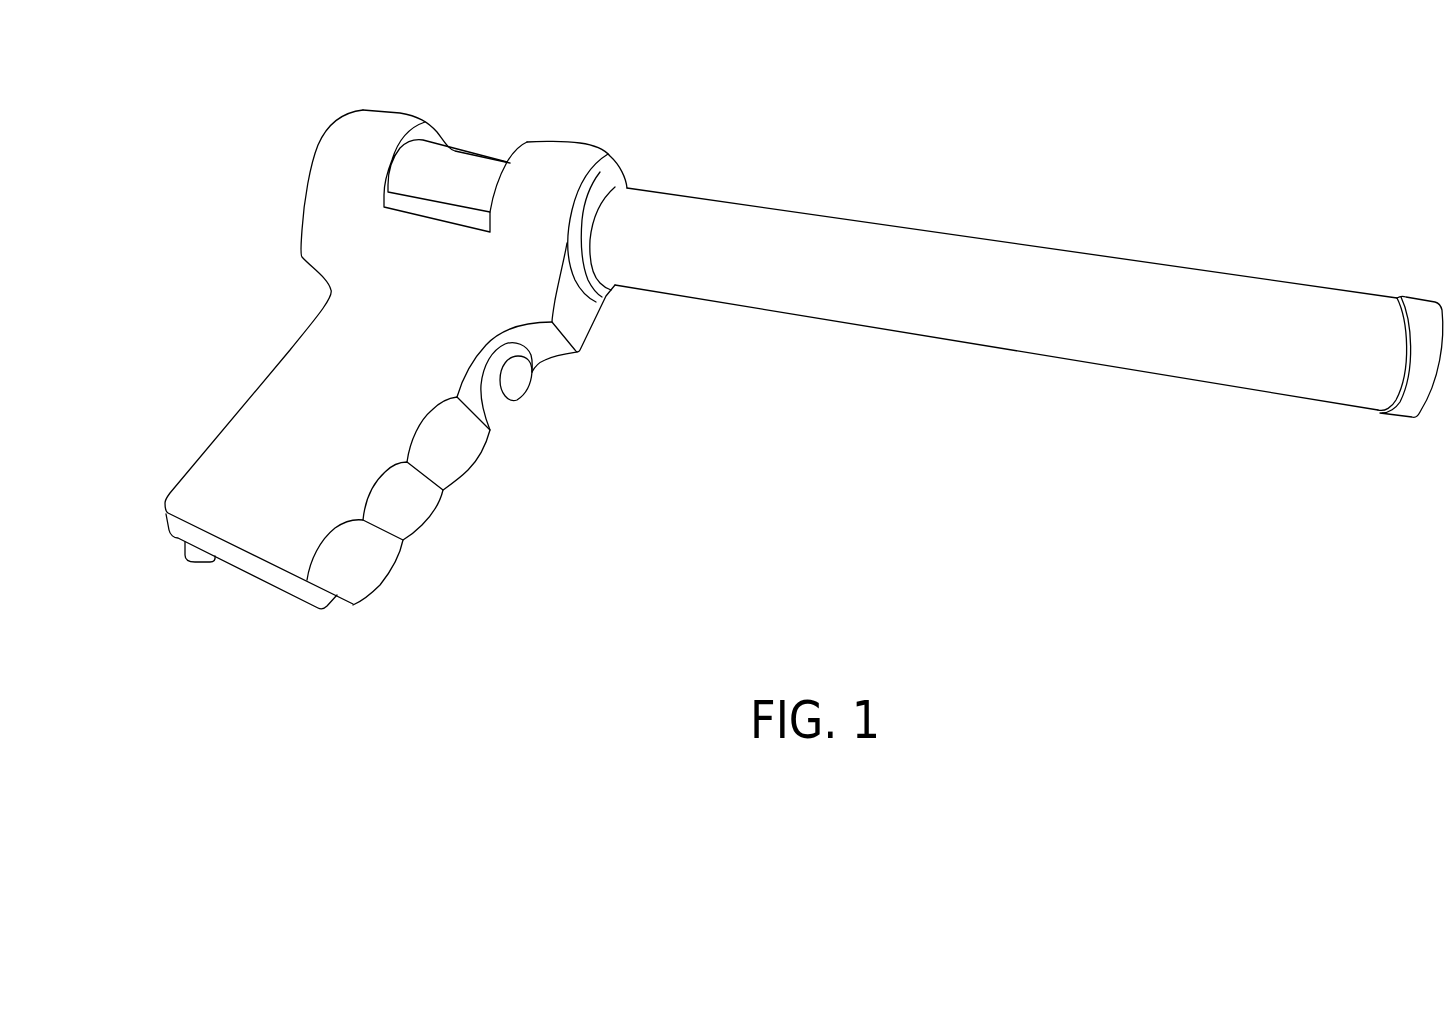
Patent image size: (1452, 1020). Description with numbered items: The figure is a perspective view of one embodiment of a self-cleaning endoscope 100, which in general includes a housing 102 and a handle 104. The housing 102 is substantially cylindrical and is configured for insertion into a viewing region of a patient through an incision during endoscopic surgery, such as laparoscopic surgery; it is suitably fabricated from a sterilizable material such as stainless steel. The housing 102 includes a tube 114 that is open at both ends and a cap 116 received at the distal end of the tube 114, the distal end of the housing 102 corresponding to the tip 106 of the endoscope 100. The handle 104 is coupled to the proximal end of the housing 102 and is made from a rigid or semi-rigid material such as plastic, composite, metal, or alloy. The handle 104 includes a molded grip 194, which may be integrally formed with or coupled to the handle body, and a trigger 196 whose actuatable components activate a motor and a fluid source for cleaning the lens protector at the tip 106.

The self-cleaning endoscope 100 is at (806, 68).
The housing 102 is at (978, 200).
The handle 104 is at (211, 353).
The tip 106 is at (1394, 446).
The tube 114 is at (1272, 300).
The cap 116 is at (1410, 297).
The molded grip 194 is at (443, 535).
The trigger 196 is at (517, 403).